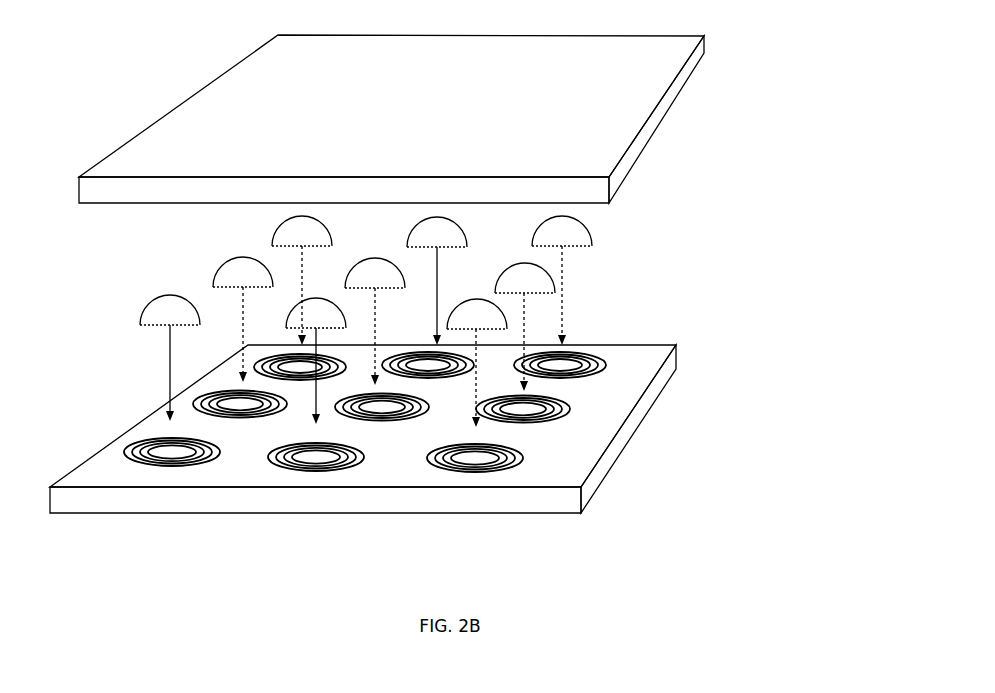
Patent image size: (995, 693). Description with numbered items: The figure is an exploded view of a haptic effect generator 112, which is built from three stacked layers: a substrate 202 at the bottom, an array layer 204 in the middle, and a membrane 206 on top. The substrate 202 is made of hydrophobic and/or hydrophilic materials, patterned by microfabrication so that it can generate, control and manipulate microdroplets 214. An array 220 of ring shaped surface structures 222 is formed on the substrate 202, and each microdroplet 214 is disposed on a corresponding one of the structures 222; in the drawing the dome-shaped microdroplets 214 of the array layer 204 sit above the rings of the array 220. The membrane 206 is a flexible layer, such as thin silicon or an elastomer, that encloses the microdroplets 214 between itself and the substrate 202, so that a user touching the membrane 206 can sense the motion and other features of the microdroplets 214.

The haptic effect generator 112 is at (724, 194).
The substrate 202 is at (533, 471).
The array layer 204 is at (320, 272).
The membrane 206 is at (413, 107).
The microdroplet 214 is at (124, 315).
The array 220 is at (405, 407).
The ring shaped surface structure 222 is at (607, 364).